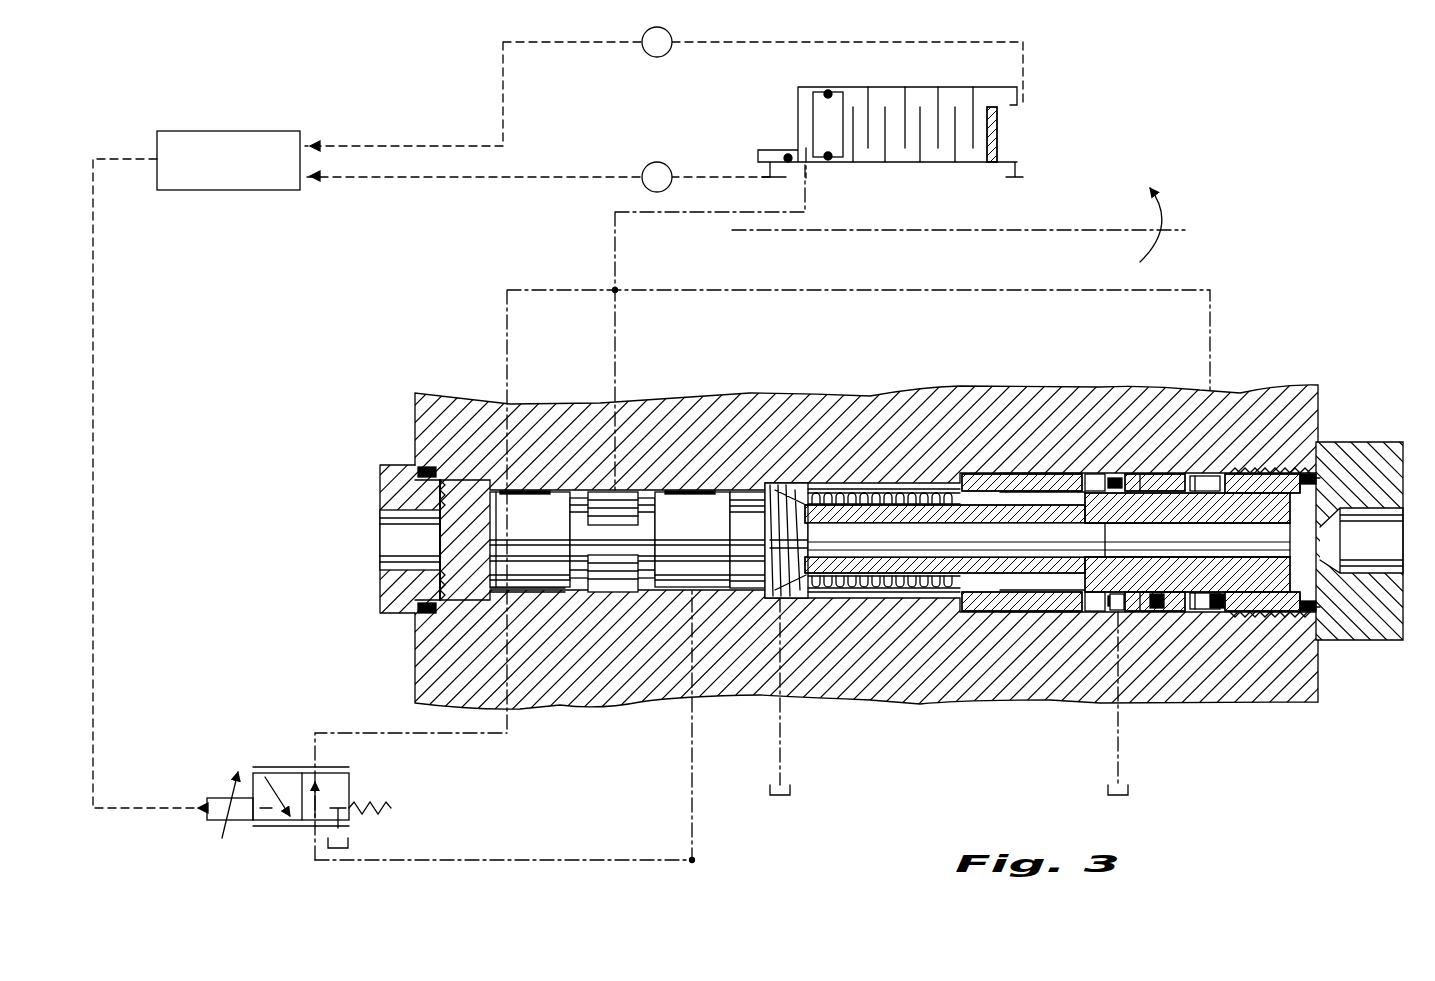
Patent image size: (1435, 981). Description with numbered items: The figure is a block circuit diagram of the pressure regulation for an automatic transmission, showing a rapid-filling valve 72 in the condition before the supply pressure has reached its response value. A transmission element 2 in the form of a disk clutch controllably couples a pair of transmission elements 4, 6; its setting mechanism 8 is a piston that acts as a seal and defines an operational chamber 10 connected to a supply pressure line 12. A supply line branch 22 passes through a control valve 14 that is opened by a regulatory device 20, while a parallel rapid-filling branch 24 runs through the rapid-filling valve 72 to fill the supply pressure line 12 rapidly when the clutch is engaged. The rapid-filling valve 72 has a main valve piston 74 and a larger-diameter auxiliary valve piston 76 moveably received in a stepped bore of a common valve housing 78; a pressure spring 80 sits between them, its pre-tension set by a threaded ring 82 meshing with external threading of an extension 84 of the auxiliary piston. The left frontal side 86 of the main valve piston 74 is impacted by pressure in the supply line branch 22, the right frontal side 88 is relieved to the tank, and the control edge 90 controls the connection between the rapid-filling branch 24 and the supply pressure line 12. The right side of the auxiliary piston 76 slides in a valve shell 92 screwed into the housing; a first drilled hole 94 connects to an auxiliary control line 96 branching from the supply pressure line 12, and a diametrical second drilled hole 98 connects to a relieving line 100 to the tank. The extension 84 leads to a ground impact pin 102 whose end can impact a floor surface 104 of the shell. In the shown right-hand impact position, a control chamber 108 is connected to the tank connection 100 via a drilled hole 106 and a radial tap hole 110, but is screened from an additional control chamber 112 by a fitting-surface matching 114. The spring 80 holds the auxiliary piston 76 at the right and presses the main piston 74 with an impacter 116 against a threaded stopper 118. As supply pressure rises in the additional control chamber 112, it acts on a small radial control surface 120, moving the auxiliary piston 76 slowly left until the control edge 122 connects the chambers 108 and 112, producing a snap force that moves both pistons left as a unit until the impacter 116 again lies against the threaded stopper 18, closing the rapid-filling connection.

The transmission element 2 is at (1015, 128).
The transmission element 4 is at (968, 162).
The transmission element 6 is at (997, 88).
The setting mechanism 8 is at (843, 102).
The operational chamber 10 is at (808, 105).
The supply pressure line 12 is at (613, 242).
The control valve 14 is at (262, 762).
The threaded stopper 18 is at (96, 543).
The regulatory device 20 is at (228, 140).
The supply line branch 22 is at (440, 733).
The rapid-filling branch 24 is at (695, 825).
The rapid-filling valve 72 is at (1226, 360).
The main valve piston 74 is at (612, 540).
The auxiliary valve piston 76 is at (1180, 592).
The valve housing 78 is at (882, 395).
The pressure spring 80 is at (810, 490).
The threaded ring 82 is at (1030, 600).
The extension 84 is at (940, 598).
The left frontal side 86 is at (480, 598).
The right frontal side 88 is at (775, 520).
The control edge 90 is at (640, 590).
The valve shell 92 is at (1252, 478).
The first drilled hole 94 is at (1205, 565).
The auxiliary control line 96 is at (808, 290).
The second drilled hole 98 is at (1120, 615).
The relieving line 100 is at (1122, 755).
The impact pin 102 is at (1230, 590).
The floor surface 104 is at (1340, 612).
The drilled hole 106 is at (1242, 602).
The control chamber 108 is at (1313, 478).
The radial tap hole 110 is at (1093, 480).
The additional control chamber 112 is at (1240, 468).
The fitting-surface matching 114 is at (1287, 452).
The impacter 116 is at (487, 537).
The threaded stopper 118 is at (385, 470).
The radial control surface 120 is at (1198, 470).
The control edge 122 is at (1318, 655).